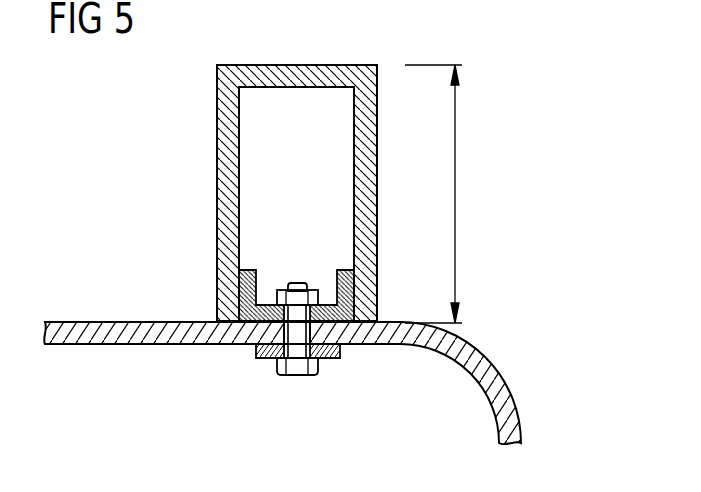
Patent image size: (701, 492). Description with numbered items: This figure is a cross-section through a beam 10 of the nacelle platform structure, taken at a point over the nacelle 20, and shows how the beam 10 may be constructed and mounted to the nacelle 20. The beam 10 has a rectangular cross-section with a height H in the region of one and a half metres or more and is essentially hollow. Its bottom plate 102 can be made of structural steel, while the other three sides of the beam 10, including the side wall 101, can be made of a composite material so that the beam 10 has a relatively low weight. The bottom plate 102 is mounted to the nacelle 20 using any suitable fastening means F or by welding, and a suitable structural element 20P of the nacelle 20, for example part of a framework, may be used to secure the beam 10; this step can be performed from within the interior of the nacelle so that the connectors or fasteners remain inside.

The beam 10 is at (260, 191).
The side wall of the profile 101 is at (217, 199).
The bottom plate 102 is at (249, 270).
The nacelle 20 is at (478, 364).
The structural element 20P is at (330, 360).
The fastening means F is at (280, 368).
The height H is at (455, 194).